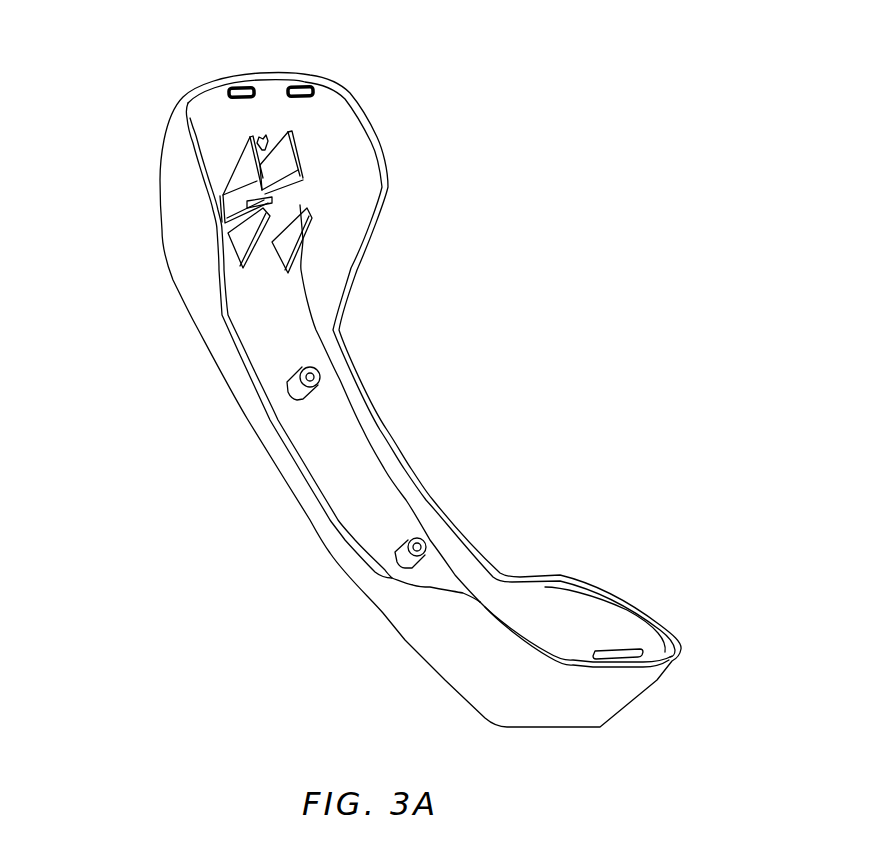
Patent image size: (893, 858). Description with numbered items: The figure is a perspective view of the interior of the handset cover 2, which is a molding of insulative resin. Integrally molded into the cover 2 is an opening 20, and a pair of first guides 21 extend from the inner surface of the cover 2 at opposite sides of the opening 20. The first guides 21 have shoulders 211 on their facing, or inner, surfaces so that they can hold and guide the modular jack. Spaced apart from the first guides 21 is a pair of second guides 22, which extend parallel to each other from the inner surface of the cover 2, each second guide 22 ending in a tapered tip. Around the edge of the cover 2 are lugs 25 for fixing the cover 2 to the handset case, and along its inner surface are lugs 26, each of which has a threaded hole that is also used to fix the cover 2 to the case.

The handset cover 2 is at (375, 127).
The opening 20 is at (265, 138).
The first guides 21 is at (250, 143).
The shoulders 211 is at (283, 195).
The second guides 22 is at (240, 243).
The lugs 25 is at (238, 85).
The lugs 26 is at (300, 390).